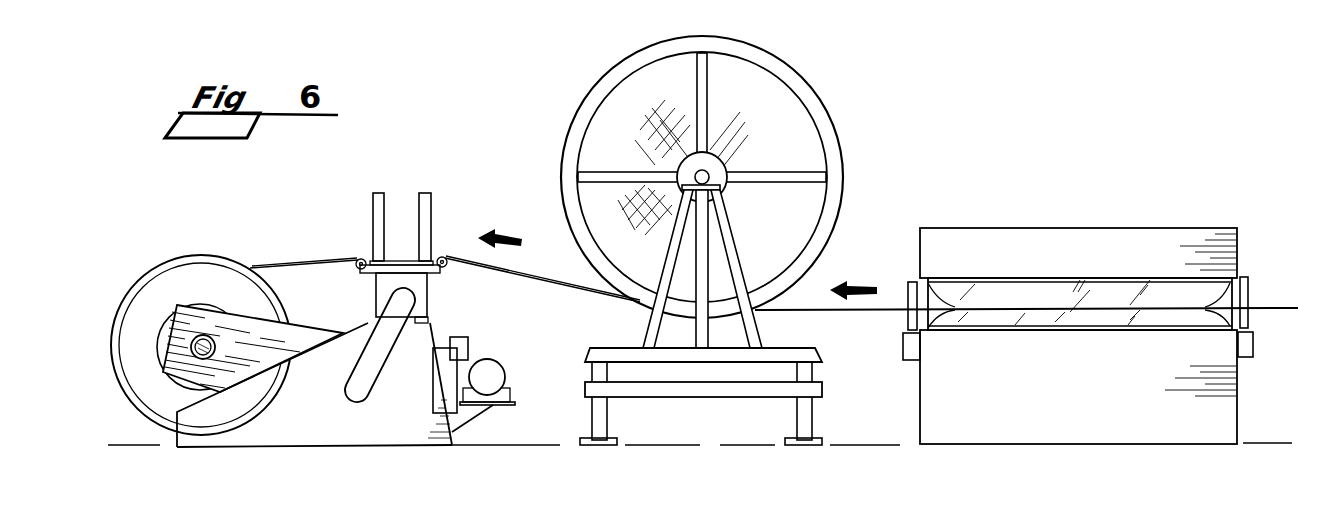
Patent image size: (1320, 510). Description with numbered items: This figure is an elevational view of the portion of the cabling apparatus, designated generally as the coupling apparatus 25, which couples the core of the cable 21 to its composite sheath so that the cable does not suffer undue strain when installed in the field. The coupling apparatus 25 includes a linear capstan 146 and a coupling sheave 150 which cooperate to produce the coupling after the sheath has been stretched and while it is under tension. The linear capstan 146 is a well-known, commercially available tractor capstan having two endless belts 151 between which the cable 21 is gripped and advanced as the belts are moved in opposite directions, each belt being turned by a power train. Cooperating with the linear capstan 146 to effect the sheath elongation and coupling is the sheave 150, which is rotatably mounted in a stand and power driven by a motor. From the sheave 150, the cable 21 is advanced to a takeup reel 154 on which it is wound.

The coupling apparatus 25 is at (780, 240).
The coupling sheave 150 is at (838, 133).
The linear capstan 146 is at (1095, 227).
The endless belts 151 is at (970, 290).
The takeup reel 154 is at (193, 253).
The cable 21 is at (514, 271).